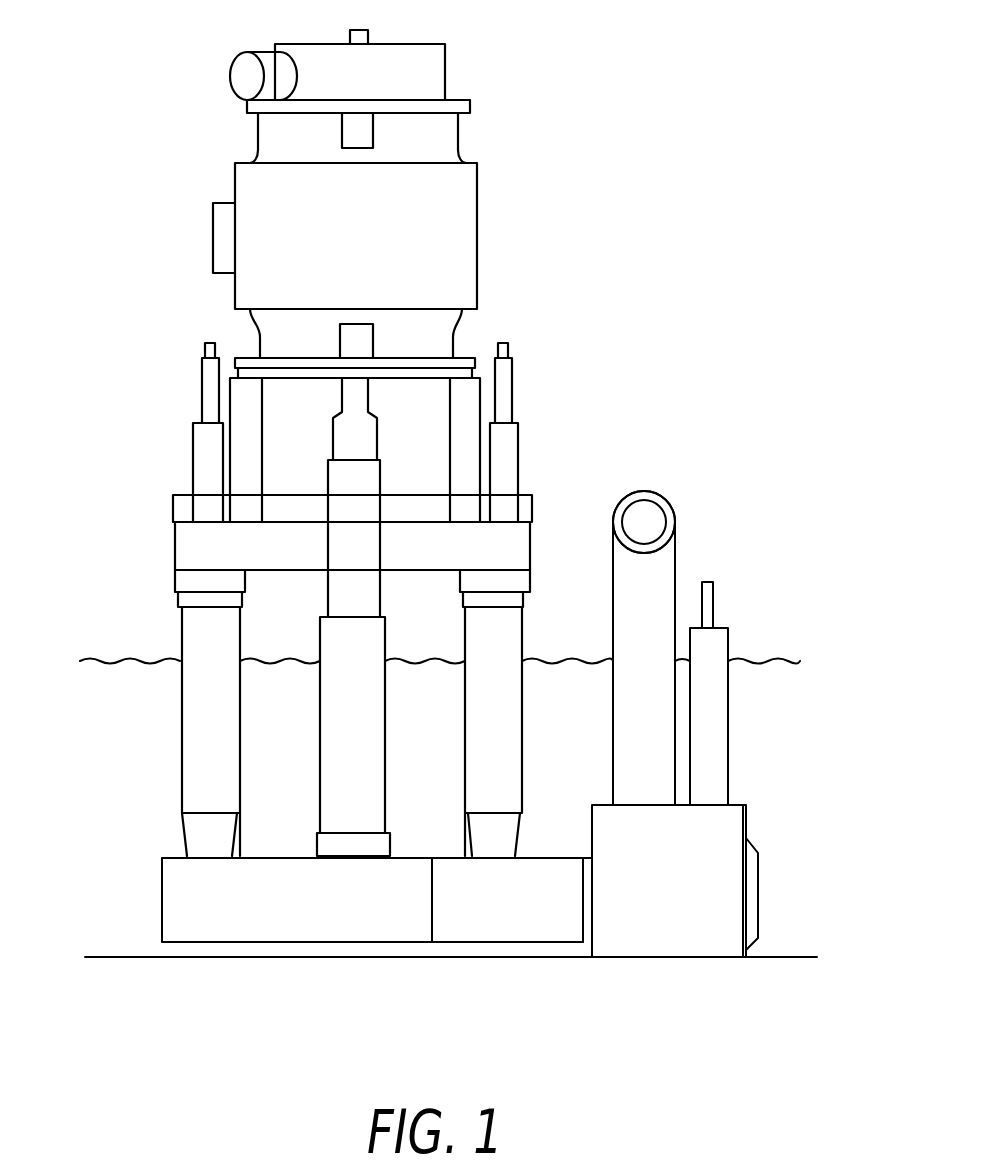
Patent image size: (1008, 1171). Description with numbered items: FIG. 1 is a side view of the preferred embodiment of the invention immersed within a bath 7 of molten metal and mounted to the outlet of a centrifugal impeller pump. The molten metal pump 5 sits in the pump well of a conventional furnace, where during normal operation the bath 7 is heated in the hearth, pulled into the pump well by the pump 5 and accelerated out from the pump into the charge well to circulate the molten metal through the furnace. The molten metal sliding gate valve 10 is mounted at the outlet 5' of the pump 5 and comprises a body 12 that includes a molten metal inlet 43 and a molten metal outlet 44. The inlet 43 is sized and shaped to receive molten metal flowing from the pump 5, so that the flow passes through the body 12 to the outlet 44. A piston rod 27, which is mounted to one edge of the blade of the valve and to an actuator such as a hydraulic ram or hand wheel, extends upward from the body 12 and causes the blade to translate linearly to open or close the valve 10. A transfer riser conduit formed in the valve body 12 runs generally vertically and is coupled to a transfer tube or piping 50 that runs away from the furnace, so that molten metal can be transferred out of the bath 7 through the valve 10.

The molten metal pump 5 is at (396, 443).
The outlet of pump 5' is at (377, 944).
The bath of molten metal 7 is at (118, 658).
The molten metal sliding gate valve 10 is at (603, 512).
The body 12 is at (665, 942).
The piston rod 27 is at (715, 592).
The molten metal inlet 43 is at (585, 873).
The molten metal outlet 44 is at (760, 890).
The transfer tube or piping 50 is at (663, 500).